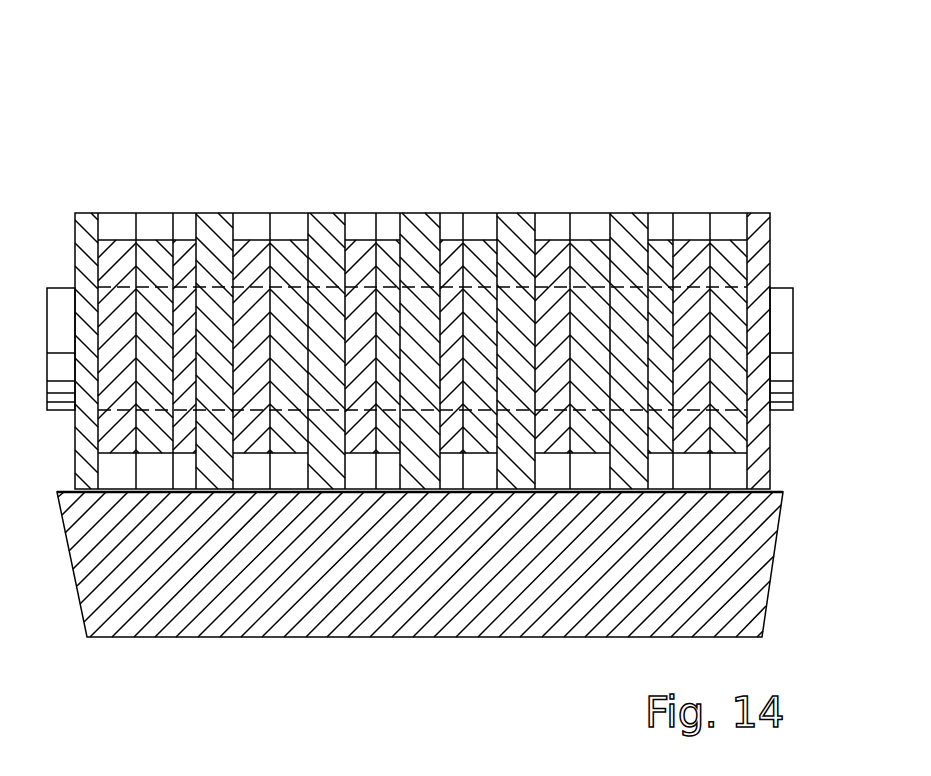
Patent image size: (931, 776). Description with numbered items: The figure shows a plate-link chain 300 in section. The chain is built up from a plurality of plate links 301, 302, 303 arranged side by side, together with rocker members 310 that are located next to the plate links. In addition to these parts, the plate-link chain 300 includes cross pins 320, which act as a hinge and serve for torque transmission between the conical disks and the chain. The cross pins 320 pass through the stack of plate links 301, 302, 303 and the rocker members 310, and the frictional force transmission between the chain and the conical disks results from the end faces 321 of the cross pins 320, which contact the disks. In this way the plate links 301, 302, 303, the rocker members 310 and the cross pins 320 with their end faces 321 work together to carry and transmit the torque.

The plate-link chain 300 is at (460, 260).
The plate link 301 is at (117, 227).
The plate link 302 is at (155, 233).
The plate link 303 is at (182, 233).
The rocker member 310 is at (787, 370).
The cross pin 320 is at (755, 572).
The end face 321 is at (783, 526).